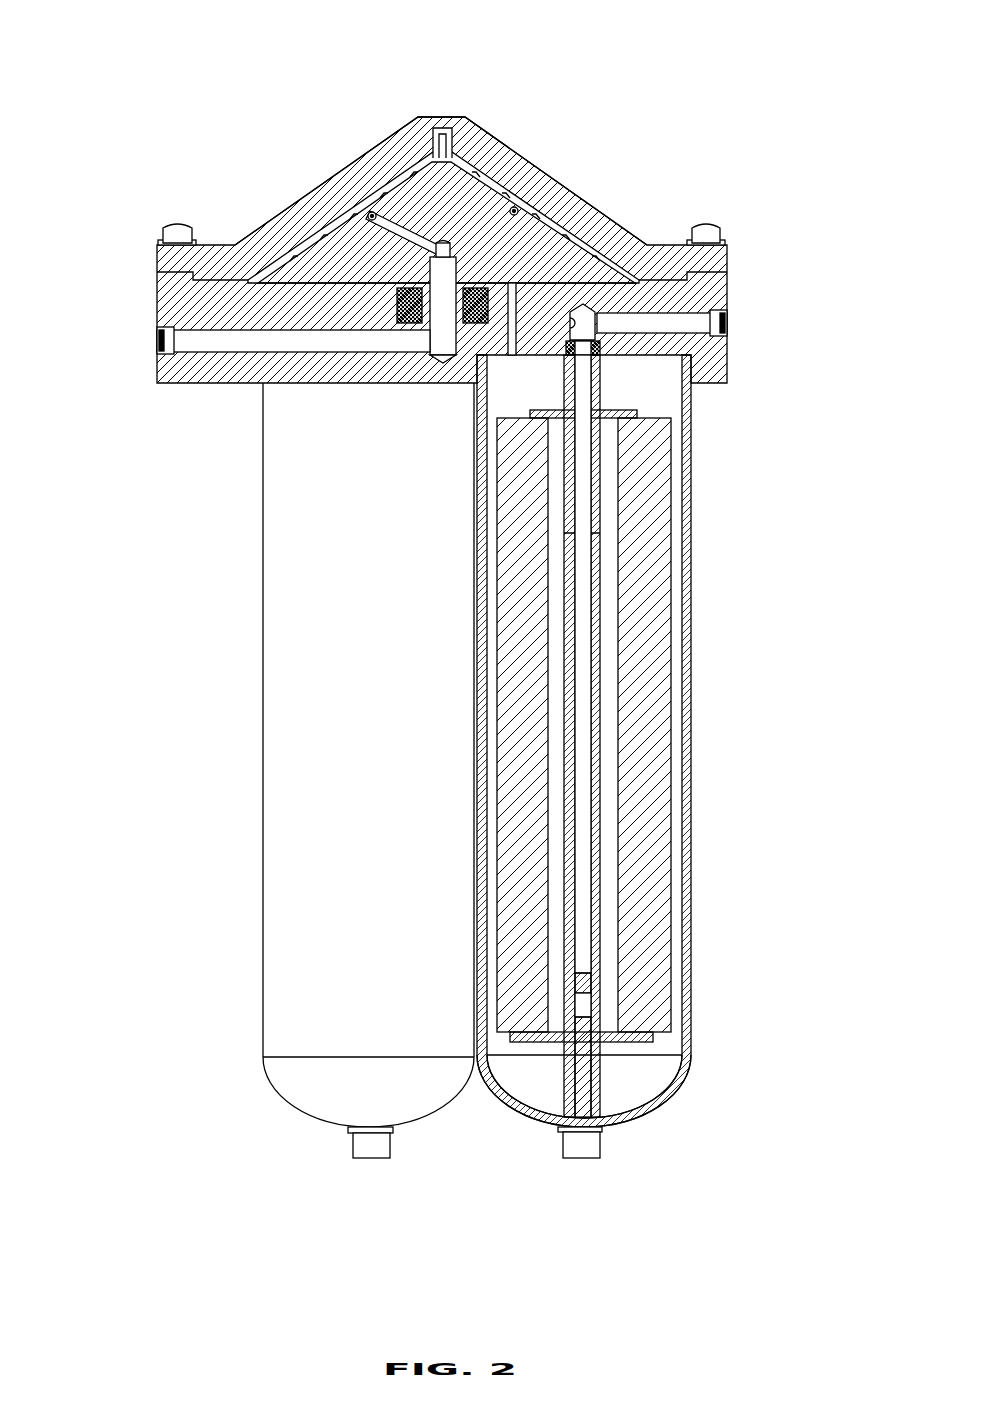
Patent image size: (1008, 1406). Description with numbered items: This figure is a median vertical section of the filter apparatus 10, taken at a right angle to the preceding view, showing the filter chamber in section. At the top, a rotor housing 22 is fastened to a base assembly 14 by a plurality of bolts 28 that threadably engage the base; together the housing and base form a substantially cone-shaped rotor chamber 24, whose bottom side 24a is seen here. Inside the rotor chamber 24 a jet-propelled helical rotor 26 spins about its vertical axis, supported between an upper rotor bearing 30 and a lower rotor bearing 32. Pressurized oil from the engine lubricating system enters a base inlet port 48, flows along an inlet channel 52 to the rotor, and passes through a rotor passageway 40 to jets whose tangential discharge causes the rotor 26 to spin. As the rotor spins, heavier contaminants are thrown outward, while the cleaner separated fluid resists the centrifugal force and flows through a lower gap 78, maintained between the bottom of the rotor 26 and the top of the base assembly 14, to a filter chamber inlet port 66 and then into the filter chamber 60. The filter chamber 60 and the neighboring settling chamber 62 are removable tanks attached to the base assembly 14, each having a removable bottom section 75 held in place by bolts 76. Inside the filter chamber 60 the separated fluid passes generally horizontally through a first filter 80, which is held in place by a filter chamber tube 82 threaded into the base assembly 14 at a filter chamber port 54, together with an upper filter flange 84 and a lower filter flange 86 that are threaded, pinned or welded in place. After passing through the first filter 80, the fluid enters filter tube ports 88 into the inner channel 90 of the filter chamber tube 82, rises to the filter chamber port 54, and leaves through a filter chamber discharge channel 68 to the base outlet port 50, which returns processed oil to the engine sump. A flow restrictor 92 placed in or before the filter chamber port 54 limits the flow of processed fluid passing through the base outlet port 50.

The filter apparatus 10 is at (809, 49).
The base assembly 14 is at (153, 297).
The rotor housing 22 is at (330, 167).
The rotor chamber 24 is at (403, 177).
The bottom side of rotor chamber 24a is at (333, 273).
The rotor 26 is at (503, 183).
The bolts 28 is at (172, 218).
The upper rotor bearing 30 is at (458, 132).
The lower rotor bearing 32 is at (388, 320).
The rotor passageway 40 is at (442, 312).
The base inlet port 48 is at (165, 340).
The base outlet port 50 is at (718, 322).
The inlet channel 52 is at (222, 340).
The filter chamber port 54 is at (583, 322).
The filter chamber 60 is at (693, 990).
The settling chamber 62 is at (262, 880).
The filter chamber inlet port 66 is at (513, 333).
The filter chamber discharge channel 68 is at (662, 323).
The removable bottom section 75 is at (676, 1112).
The bolts 76 is at (352, 1145).
The lower gap 78 is at (305, 288).
The first filter 80 is at (670, 855).
The filter chamber tube 82 is at (600, 945).
The upper filter flange 84 is at (640, 418).
The lower filter flange 86 is at (640, 1045).
The filter tube ports 88 is at (601, 710).
The inner channel 90 is at (586, 835).
The flow restrictor 92 is at (588, 357).